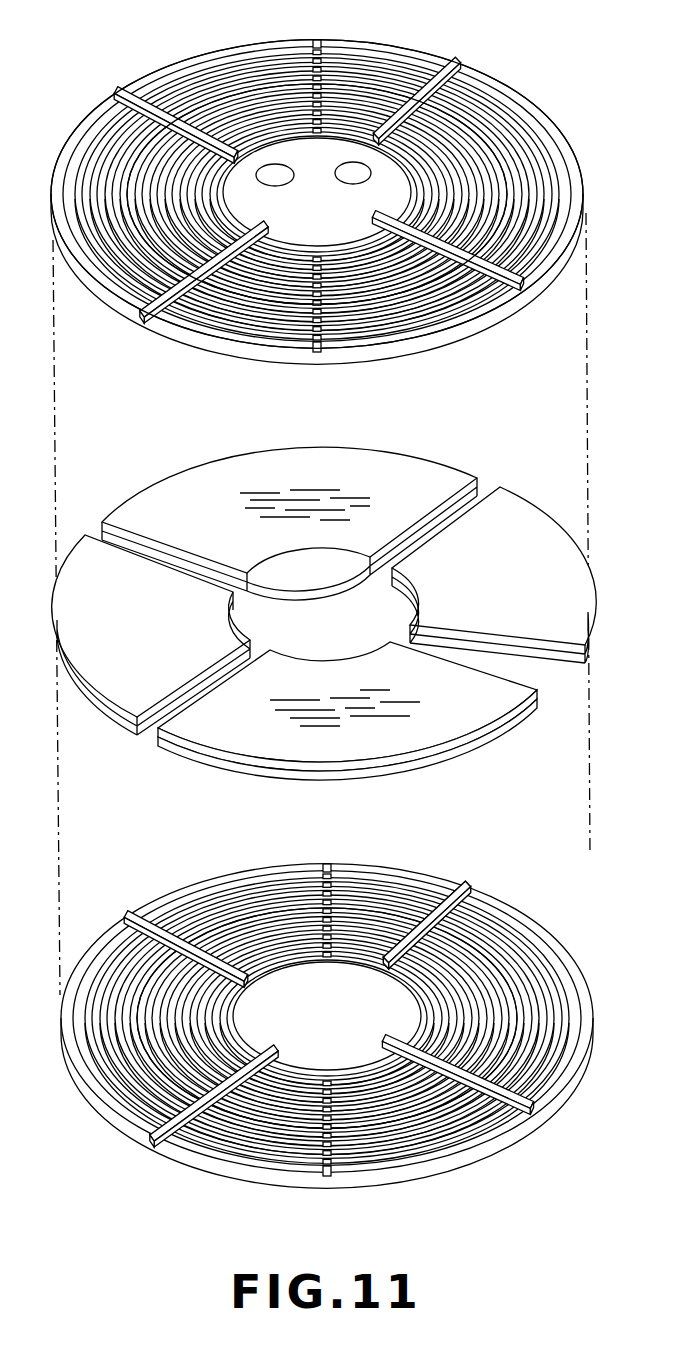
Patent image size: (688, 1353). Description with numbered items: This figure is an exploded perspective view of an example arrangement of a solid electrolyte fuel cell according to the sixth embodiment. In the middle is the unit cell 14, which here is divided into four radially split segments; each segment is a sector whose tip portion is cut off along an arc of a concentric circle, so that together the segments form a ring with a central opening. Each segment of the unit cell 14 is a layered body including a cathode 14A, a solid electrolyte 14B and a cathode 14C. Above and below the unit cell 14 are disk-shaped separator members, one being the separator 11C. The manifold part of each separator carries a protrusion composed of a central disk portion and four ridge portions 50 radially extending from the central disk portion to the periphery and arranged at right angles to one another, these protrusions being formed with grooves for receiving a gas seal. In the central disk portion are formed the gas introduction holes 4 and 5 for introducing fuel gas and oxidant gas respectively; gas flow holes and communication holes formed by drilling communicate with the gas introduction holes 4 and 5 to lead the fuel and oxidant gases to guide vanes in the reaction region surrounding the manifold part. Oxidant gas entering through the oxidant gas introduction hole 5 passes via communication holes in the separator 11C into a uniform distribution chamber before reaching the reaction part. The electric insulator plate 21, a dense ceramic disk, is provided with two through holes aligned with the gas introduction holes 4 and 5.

The gas introduction hole 4 is at (270, 170).
The gas introduction hole 5 is at (347, 167).
The electric insulator plate 21 is at (385, 165).
The separator 11C is at (520, 308).
The unit cell 14 is at (408, 454).
The cathode 14A is at (508, 515).
The solid electrolyte 14B is at (503, 723).
The cathode 14C is at (457, 755).
The ridge portion 50 is at (466, 882).